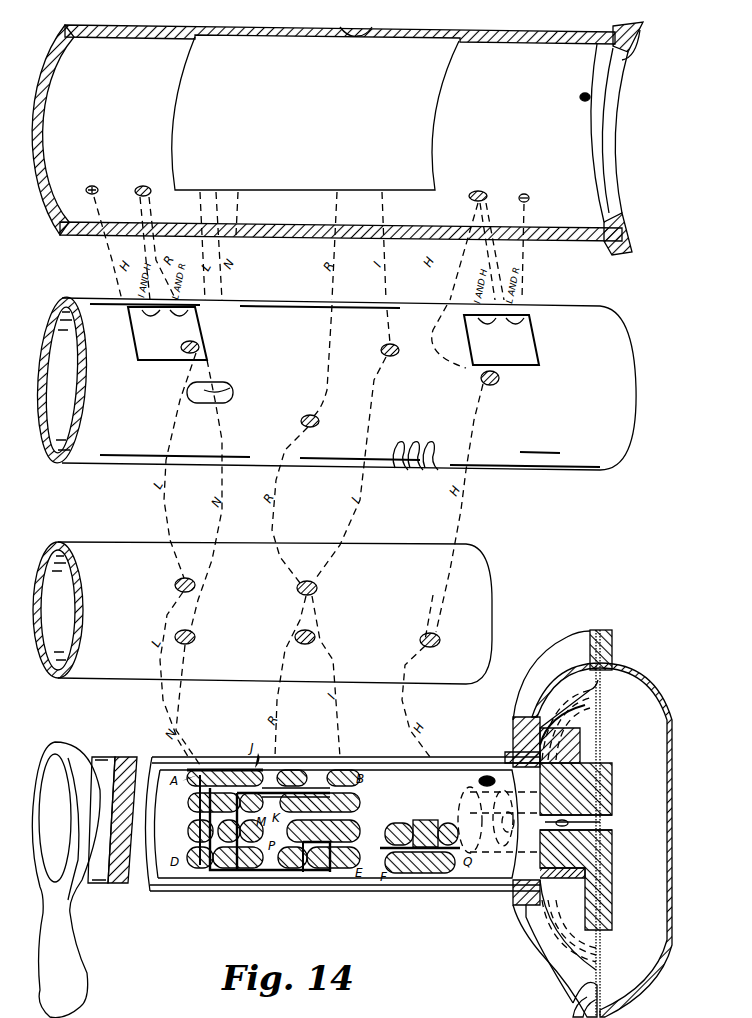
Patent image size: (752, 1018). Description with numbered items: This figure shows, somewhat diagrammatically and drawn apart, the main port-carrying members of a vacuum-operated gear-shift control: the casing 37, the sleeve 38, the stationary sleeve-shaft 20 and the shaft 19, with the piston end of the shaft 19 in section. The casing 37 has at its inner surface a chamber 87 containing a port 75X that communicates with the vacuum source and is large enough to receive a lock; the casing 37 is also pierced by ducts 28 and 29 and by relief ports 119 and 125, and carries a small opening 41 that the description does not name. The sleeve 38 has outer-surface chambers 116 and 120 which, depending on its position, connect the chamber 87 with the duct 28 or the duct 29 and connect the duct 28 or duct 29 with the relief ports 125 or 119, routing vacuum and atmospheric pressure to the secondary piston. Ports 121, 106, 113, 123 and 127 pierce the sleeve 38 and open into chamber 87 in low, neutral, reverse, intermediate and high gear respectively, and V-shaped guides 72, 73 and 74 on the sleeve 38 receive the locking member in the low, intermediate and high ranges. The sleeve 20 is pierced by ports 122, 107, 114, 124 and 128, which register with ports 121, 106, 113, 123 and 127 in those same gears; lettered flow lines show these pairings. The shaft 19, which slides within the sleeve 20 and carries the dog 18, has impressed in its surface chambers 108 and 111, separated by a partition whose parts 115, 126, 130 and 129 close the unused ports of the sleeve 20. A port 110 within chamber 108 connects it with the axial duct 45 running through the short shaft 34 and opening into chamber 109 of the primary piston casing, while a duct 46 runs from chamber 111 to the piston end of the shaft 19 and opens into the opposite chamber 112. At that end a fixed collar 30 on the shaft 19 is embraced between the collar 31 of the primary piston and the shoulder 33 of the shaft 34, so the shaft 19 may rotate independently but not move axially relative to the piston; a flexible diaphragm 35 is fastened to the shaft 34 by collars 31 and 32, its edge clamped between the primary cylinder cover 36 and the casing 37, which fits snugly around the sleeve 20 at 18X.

The dog 18 is at (84, 936).
The snug-fit portion of casing 18X is at (608, 99).
The shaft 19 is at (444, 766).
The sleeve-shaft 20 is at (395, 552).
The duct 28 is at (150, 188).
The duct 29 is at (486, 192).
The fixed collar 30 is at (585, 742).
The collar of the primary piston 31 is at (572, 735).
The collar 32 is at (612, 788).
The shoulder 33 is at (564, 824).
The short shaft 34 is at (608, 842).
The flexible diaphragm 35 is at (600, 690).
The primary cylinder cover 36 is at (614, 670).
The casing 37 is at (507, 37).
The sleeve 38 is at (560, 310).
The pin hole 41 is at (584, 94).
The axial duct 45 is at (608, 826).
The duct 46 is at (515, 893).
The V-shaped guide 72 is at (401, 443).
The V-shaped guide 73 is at (427, 443).
The V-shaped guide 74 is at (440, 444).
The port 75X is at (352, 27).
The chamber 87 is at (407, 37).
The port 106 is at (220, 390).
The port 107 is at (191, 641).
The chamber 108 is at (418, 766).
The chamber of the primary piston casing 109 is at (636, 693).
The port 110 is at (480, 779).
The chamber 111 is at (152, 768).
The chamber of the primary piston casing 112 is at (580, 672).
The port 113 is at (303, 418).
The port 114 is at (295, 637).
The partition part 115 is at (213, 812).
The chamber 116 is at (138, 345).
The relief port 119 is at (522, 195).
The chamber 120 is at (533, 348).
The port 121 is at (181, 347).
The port 122 is at (176, 582).
The port 123 is at (388, 356).
The port 124 is at (317, 589).
The relief port 125 is at (100, 178).
The partition part 126 is at (340, 796).
The port 127 is at (499, 381).
The port 128 is at (420, 638).
The partition part 129 is at (438, 822).
The partition part 130 is at (320, 873).